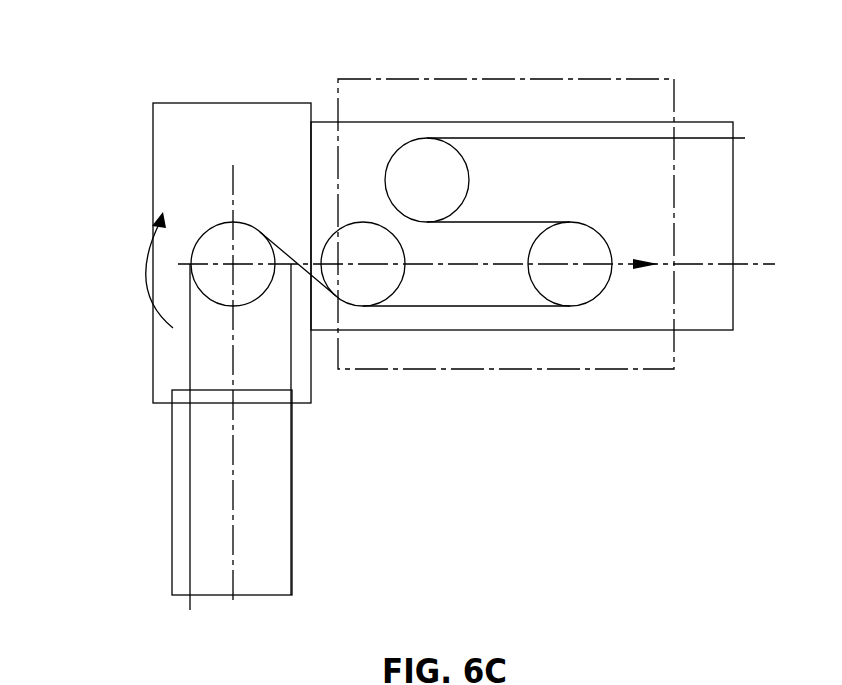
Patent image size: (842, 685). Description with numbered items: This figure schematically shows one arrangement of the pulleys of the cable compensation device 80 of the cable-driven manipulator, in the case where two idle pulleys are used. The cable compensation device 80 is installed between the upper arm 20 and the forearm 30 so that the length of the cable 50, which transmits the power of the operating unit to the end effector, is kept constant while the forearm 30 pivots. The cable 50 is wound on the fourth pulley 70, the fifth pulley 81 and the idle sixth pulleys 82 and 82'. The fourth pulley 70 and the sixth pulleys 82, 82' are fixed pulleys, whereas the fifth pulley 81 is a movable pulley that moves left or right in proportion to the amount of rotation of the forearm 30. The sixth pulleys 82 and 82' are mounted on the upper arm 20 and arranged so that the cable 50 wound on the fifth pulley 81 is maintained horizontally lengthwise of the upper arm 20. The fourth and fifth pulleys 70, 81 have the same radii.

The upper arm 20 is at (714, 104).
The forearm 30 is at (160, 506).
The cable 50 is at (492, 308).
The fourth pulley 70 is at (208, 285).
The cable compensation device 80 is at (430, 394).
The fifth pulley 81 is at (575, 293).
The sixth pulley 82 is at (363, 338).
The sixth pulley 82' is at (427, 118).